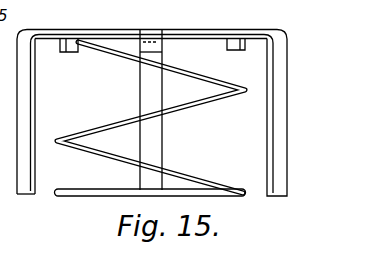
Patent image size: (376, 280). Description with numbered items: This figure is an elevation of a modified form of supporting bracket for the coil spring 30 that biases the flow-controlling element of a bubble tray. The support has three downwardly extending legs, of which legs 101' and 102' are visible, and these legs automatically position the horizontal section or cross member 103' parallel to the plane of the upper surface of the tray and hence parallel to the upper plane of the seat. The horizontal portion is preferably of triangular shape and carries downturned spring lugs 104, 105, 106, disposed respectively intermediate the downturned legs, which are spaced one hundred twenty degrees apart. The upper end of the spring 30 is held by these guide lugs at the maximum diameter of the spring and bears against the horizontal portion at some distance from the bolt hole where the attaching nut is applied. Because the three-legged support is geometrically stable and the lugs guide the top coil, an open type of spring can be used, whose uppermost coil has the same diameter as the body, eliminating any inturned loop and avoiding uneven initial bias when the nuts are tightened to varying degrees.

The spring 30 is at (107, 123).
The downwardly extending leg 101' is at (175, 110).
The downwardly extending leg 102' is at (256, 113).
The horizontal section or cross member 103' is at (152, 19).
The downturned spring lug 104 is at (63, 53).
The downturned spring lug 105 is at (158, 14).
The downturned spring lug 106 is at (239, 51).